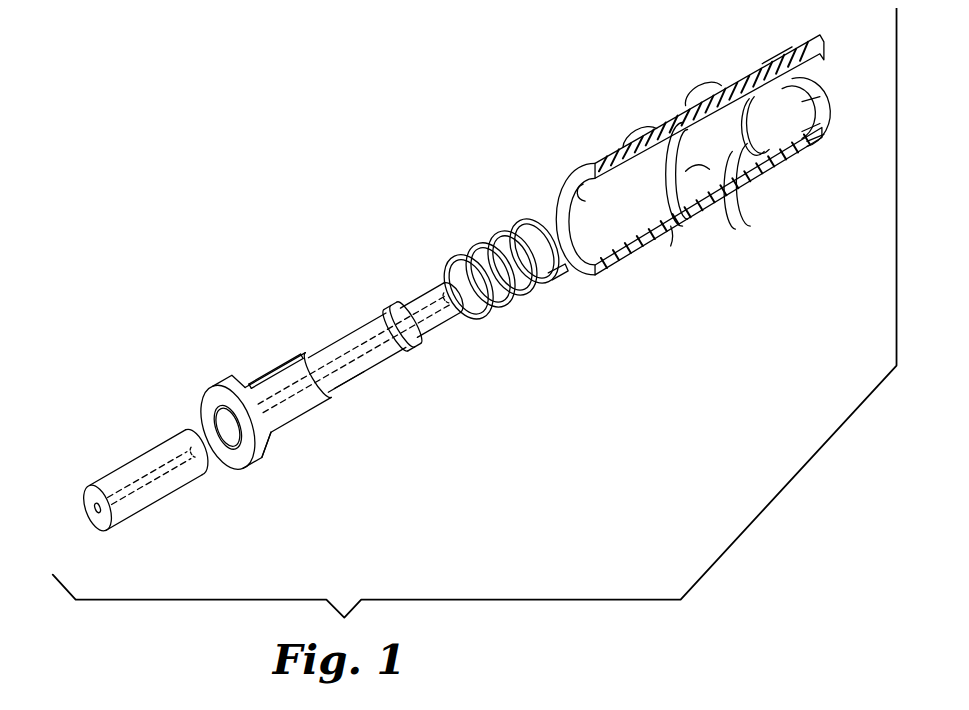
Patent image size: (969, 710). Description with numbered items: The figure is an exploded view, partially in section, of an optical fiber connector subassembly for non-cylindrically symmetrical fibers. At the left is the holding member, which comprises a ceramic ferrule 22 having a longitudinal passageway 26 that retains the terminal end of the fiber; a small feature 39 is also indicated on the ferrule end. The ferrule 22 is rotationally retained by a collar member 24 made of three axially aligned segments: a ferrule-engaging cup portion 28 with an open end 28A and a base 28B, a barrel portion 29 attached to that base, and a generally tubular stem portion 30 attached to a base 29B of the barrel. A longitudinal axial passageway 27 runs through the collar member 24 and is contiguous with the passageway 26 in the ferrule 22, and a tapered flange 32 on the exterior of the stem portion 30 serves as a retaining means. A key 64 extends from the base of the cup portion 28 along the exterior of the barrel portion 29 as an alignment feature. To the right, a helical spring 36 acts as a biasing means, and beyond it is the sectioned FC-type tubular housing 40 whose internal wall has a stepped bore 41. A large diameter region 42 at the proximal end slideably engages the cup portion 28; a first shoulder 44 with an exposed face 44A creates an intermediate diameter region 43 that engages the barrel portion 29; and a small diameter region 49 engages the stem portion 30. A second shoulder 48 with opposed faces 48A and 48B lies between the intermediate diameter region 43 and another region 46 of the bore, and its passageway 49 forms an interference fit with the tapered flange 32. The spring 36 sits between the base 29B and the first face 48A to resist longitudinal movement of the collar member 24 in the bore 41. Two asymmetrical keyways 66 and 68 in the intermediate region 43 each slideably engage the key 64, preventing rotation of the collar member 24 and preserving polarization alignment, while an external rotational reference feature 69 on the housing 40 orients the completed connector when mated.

The ferrule 22 is at (127, 484).
The collar member 24 is at (326, 383).
The longitudinal passageway 26 is at (135, 500).
The longitudinal axial passageway 27 is at (388, 362).
The cup portion 28 is at (230, 417).
The open end 28A is at (226, 468).
The base 28B is at (272, 428).
The barrel portion 29 is at (326, 400).
The base of the barrel portion 29B is at (336, 391).
The stem portion 30 is at (343, 335).
The tapered flange 32 is at (388, 318).
The helical spring 36 is at (454, 262).
The pin hole 39 is at (87, 501).
The tubular housing 40 is at (699, 176).
The stepped internal bore 41 is at (592, 241).
The large diameter region 42 is at (577, 202).
The intermediate diameter region 43 is at (743, 163).
The first shoulder 44 is at (710, 183).
The exposed face 44A is at (668, 180).
The another region of the bore 46 is at (812, 118).
The second shoulder 48 is at (762, 40).
The first face of the second shoulder 48A is at (765, 175).
The opposed face of the second shoulder 48B is at (803, 99).
The small diameter region 49 is at (808, 150).
The key 64 is at (282, 372).
The keyway 66 is at (667, 120).
The keyway 68 is at (733, 168).
The rotational reference feature 69 is at (610, 152).